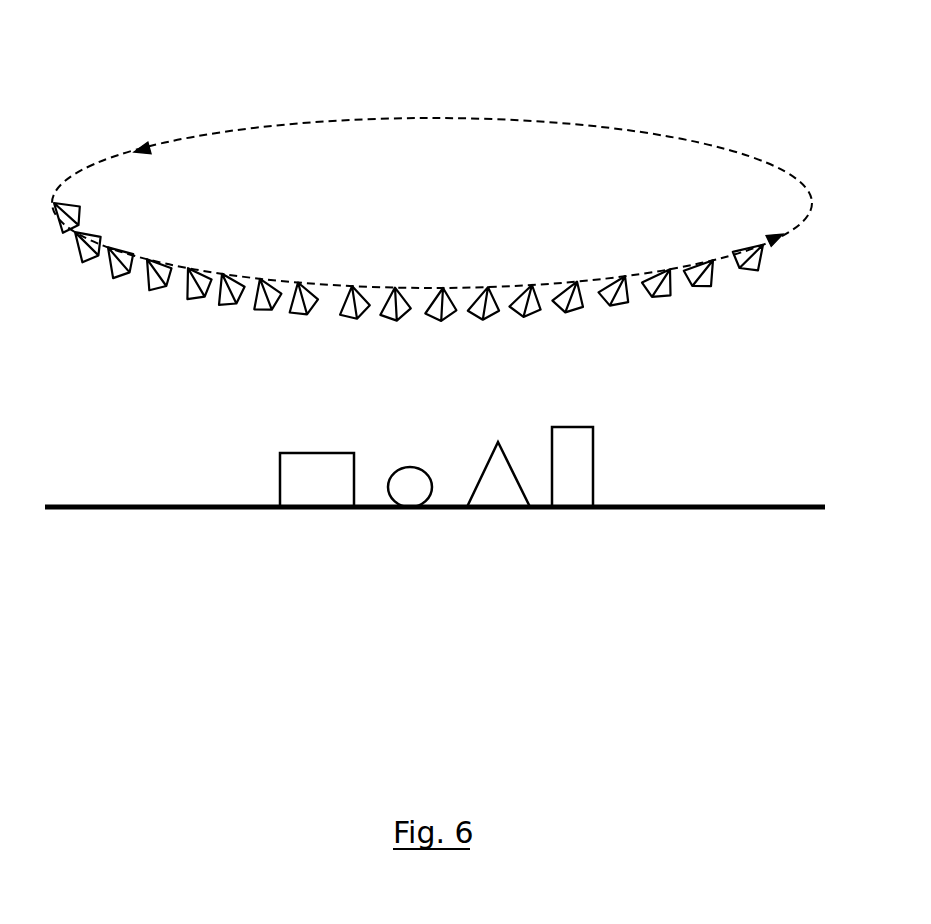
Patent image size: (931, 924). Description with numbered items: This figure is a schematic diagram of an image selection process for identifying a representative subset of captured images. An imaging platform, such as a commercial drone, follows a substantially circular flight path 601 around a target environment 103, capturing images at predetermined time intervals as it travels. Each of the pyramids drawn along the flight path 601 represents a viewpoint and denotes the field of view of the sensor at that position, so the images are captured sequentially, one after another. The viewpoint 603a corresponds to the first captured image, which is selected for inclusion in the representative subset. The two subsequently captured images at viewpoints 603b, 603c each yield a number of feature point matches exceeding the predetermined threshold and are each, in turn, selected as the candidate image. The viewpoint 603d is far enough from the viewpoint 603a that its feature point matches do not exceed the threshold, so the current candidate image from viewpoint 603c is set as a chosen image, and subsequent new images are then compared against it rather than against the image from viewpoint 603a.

The flight path 601 is at (297, 124).
The viewpoint 603a is at (298, 283).
The viewpoint 603b is at (395, 288).
The viewpoint 603c is at (443, 288).
The viewpoint 603d is at (488, 287).
The target environment 103 is at (232, 415).